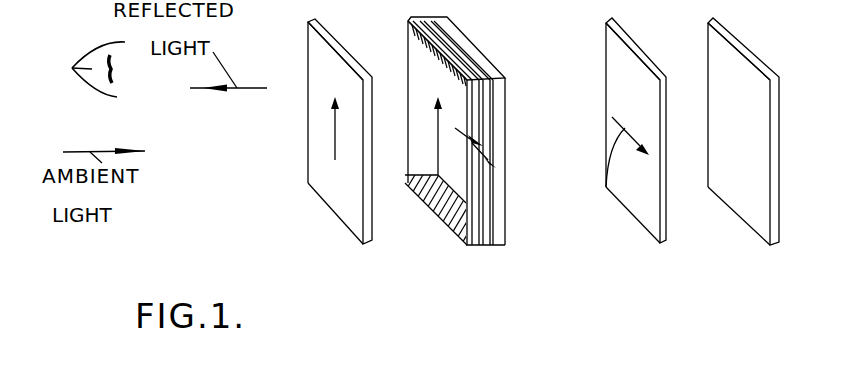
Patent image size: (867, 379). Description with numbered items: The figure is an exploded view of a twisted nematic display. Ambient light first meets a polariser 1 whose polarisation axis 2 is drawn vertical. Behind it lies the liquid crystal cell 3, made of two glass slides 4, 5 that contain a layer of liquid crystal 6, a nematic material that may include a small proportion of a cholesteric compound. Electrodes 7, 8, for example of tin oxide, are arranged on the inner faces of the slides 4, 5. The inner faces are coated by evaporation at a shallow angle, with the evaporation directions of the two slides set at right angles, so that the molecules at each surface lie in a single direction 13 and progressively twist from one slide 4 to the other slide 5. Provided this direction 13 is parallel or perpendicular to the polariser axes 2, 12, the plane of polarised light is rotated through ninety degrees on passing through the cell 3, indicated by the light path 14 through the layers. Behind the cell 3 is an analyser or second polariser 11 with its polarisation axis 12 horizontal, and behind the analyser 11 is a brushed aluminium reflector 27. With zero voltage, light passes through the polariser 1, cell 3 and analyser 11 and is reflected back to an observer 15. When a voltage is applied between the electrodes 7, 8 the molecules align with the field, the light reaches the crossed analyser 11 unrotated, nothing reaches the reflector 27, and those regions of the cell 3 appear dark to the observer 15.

The polariser 1 is at (345, 207).
The polarisation axis 2 is at (335, 160).
The liquid crystal cell 3 is at (451, 159).
The glass slide 4 is at (453, 215).
The glass slide 5 is at (503, 247).
The layer of liquid crystal 6 is at (483, 247).
The electrode 7 is at (477, 247).
The electrode 8 is at (490, 247).
The analyser 11 is at (650, 225).
The polarisation axis 12 is at (608, 192).
The direction of the molecules 13 is at (425, 190).
The light path through cell 14 is at (494, 133).
The observer 15 is at (107, 60).
The brushed aluminium reflector 27 is at (743, 207).